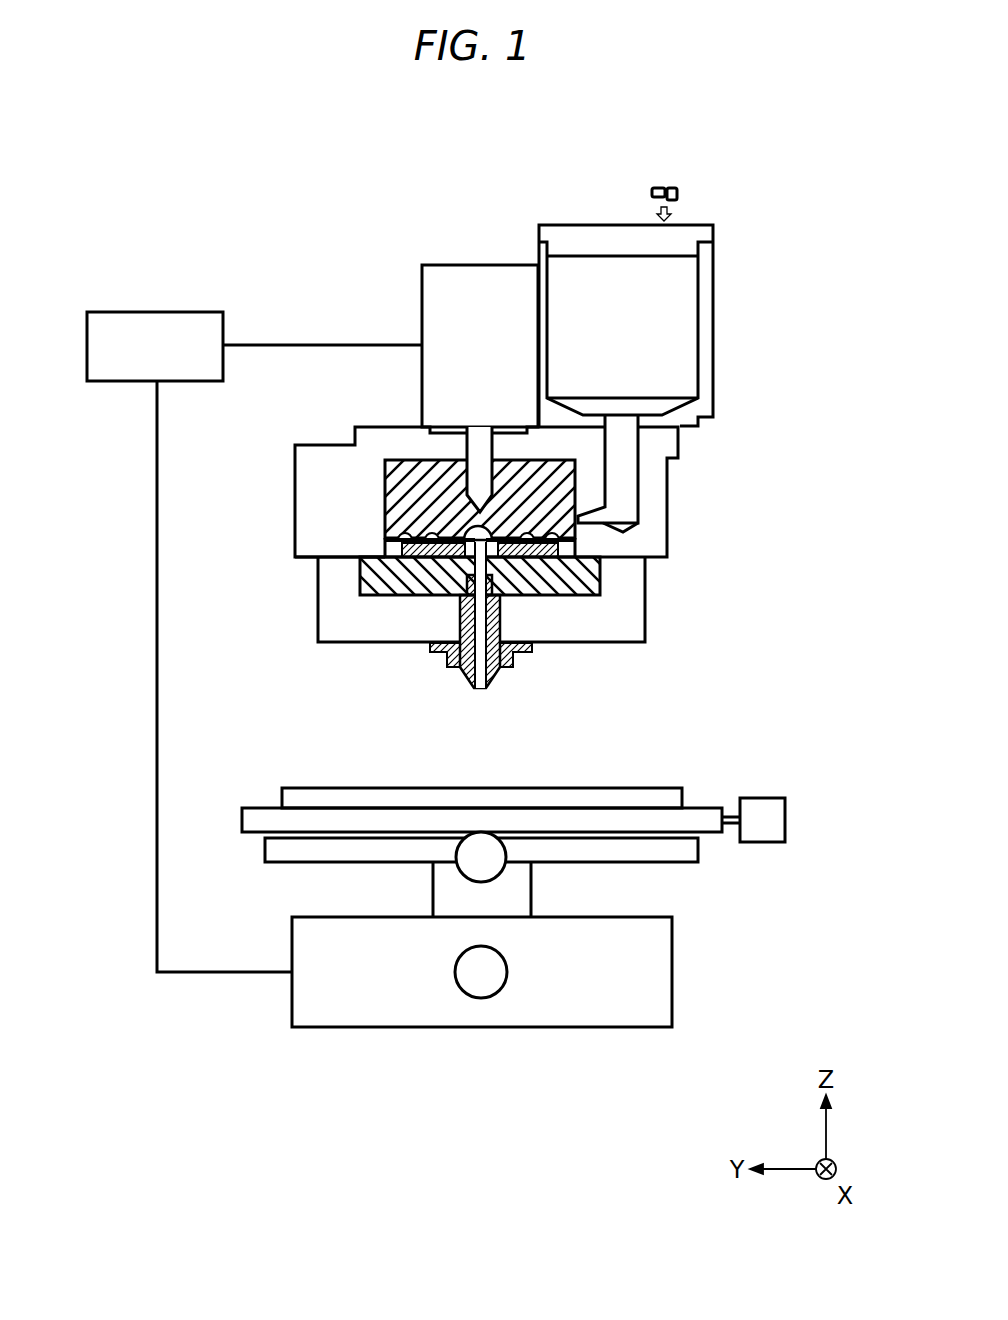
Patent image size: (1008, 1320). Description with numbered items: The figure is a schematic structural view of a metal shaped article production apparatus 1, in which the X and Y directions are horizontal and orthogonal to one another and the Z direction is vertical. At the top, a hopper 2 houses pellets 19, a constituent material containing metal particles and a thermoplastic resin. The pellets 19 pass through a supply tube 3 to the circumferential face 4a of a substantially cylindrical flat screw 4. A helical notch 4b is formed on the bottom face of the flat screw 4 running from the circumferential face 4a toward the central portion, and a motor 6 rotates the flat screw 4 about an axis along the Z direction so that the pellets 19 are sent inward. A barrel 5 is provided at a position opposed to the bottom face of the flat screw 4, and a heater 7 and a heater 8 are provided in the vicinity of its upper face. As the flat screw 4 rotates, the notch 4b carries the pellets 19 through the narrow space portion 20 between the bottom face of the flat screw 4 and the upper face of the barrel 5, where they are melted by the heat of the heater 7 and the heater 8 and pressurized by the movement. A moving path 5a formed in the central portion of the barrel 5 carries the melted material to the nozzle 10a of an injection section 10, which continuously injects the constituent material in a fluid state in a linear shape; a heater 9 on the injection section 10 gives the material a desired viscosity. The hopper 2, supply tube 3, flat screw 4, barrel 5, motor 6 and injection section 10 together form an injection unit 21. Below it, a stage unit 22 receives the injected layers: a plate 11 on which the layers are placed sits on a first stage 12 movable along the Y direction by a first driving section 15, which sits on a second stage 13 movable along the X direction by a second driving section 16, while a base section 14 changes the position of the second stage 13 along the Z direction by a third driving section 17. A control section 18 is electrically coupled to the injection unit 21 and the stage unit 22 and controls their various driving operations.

The metal shaped article production apparatus 1 is at (775, 168).
The hopper 2 is at (625, 275).
The supply tube 3 is at (623, 477).
The flat screw 4 is at (540, 385).
The circumferential face 4a is at (590, 526).
The notch 4b is at (458, 530).
The barrel 5 is at (407, 589).
The moving path 5a is at (500, 597).
The motor 6 is at (475, 297).
The heater 7 is at (480, 575).
The heater 8 is at (425, 573).
The heater 9 is at (449, 635).
The injection section 10 is at (443, 652).
The nozzle 10a is at (481, 687).
The plate 11 is at (320, 790).
The first stage 12 is at (372, 818).
The second stage 13 is at (305, 852).
The base section 14 is at (600, 995).
The first driving section 15 is at (763, 825).
The second driving section 16 is at (487, 858).
The third driving section 17 is at (480, 978).
The control section 18 is at (157, 328).
The pellet 19 is at (675, 190).
The space portion 20 is at (489, 527).
The injection unit 21 is at (737, 388).
The stage unit 22 is at (439, 947).